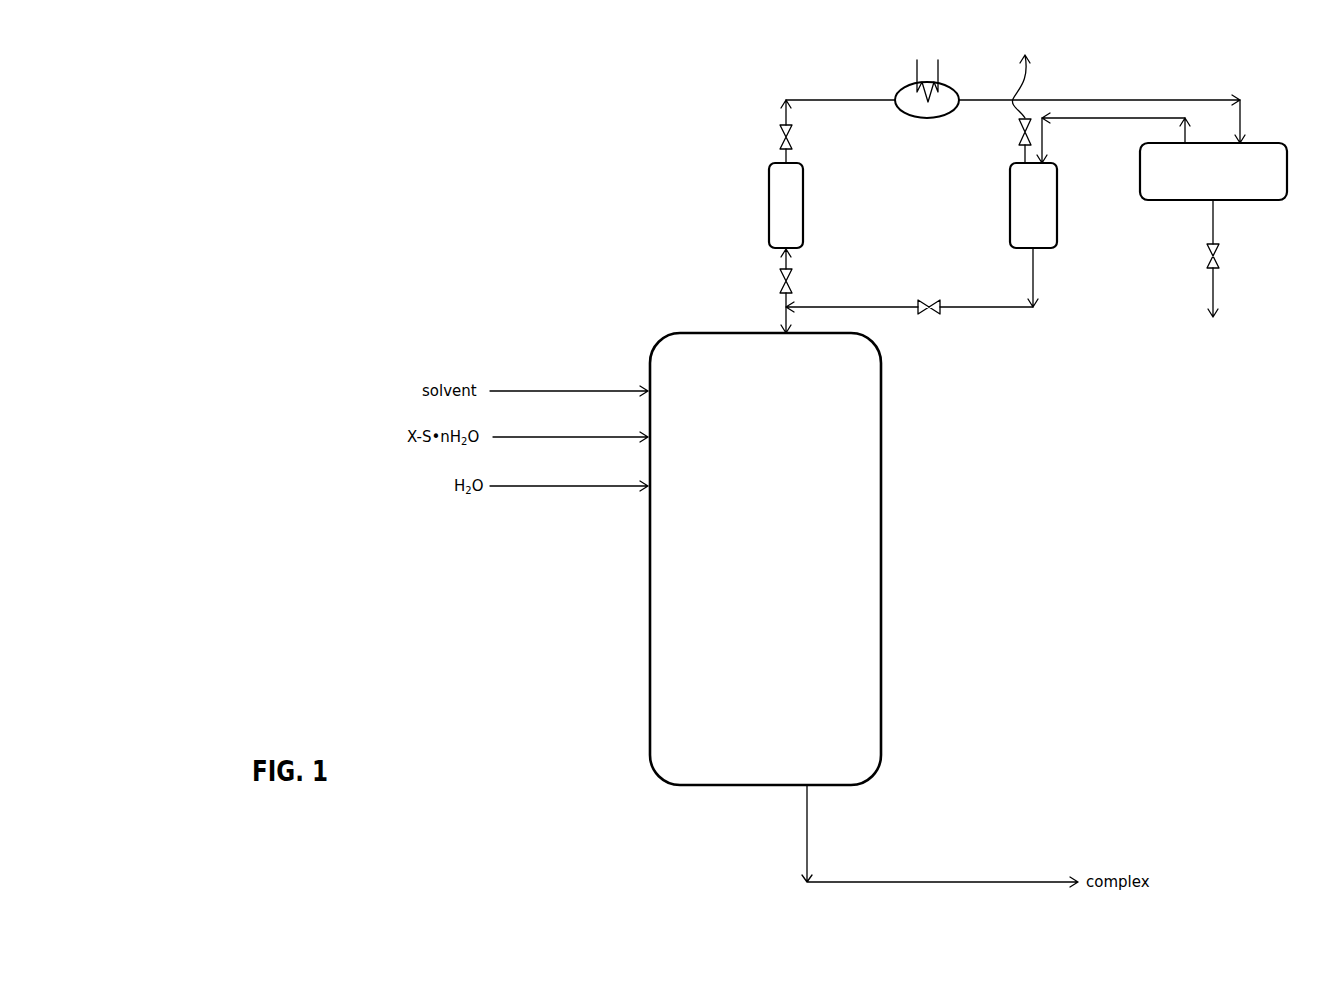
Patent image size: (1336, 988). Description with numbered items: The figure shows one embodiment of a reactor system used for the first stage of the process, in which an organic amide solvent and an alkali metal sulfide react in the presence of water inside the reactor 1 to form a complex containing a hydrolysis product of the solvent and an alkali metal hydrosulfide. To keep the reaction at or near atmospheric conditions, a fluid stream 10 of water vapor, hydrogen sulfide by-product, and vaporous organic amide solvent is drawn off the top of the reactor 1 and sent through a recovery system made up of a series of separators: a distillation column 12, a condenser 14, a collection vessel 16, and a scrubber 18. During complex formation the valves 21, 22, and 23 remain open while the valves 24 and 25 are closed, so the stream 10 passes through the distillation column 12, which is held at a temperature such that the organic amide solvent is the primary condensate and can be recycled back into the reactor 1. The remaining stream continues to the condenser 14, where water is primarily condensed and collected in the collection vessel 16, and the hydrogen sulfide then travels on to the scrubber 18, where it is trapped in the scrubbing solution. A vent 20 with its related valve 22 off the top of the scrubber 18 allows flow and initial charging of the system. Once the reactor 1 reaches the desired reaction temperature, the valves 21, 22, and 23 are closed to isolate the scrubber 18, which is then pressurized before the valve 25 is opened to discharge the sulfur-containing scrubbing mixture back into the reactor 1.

The reactor 1 is at (769, 539).
The fluid stream 10 is at (796, 260).
The distillation column 12 is at (768, 212).
The condenser 14 is at (900, 92).
The collection vessel 16 is at (1272, 147).
The scrubber 18 is at (1010, 218).
The vent 20 is at (1033, 75).
The valve 21 is at (778, 282).
The valve 22 is at (1017, 128).
The valve 23 is at (777, 135).
The valve 24 is at (1207, 253).
The valve 25 is at (931, 300).